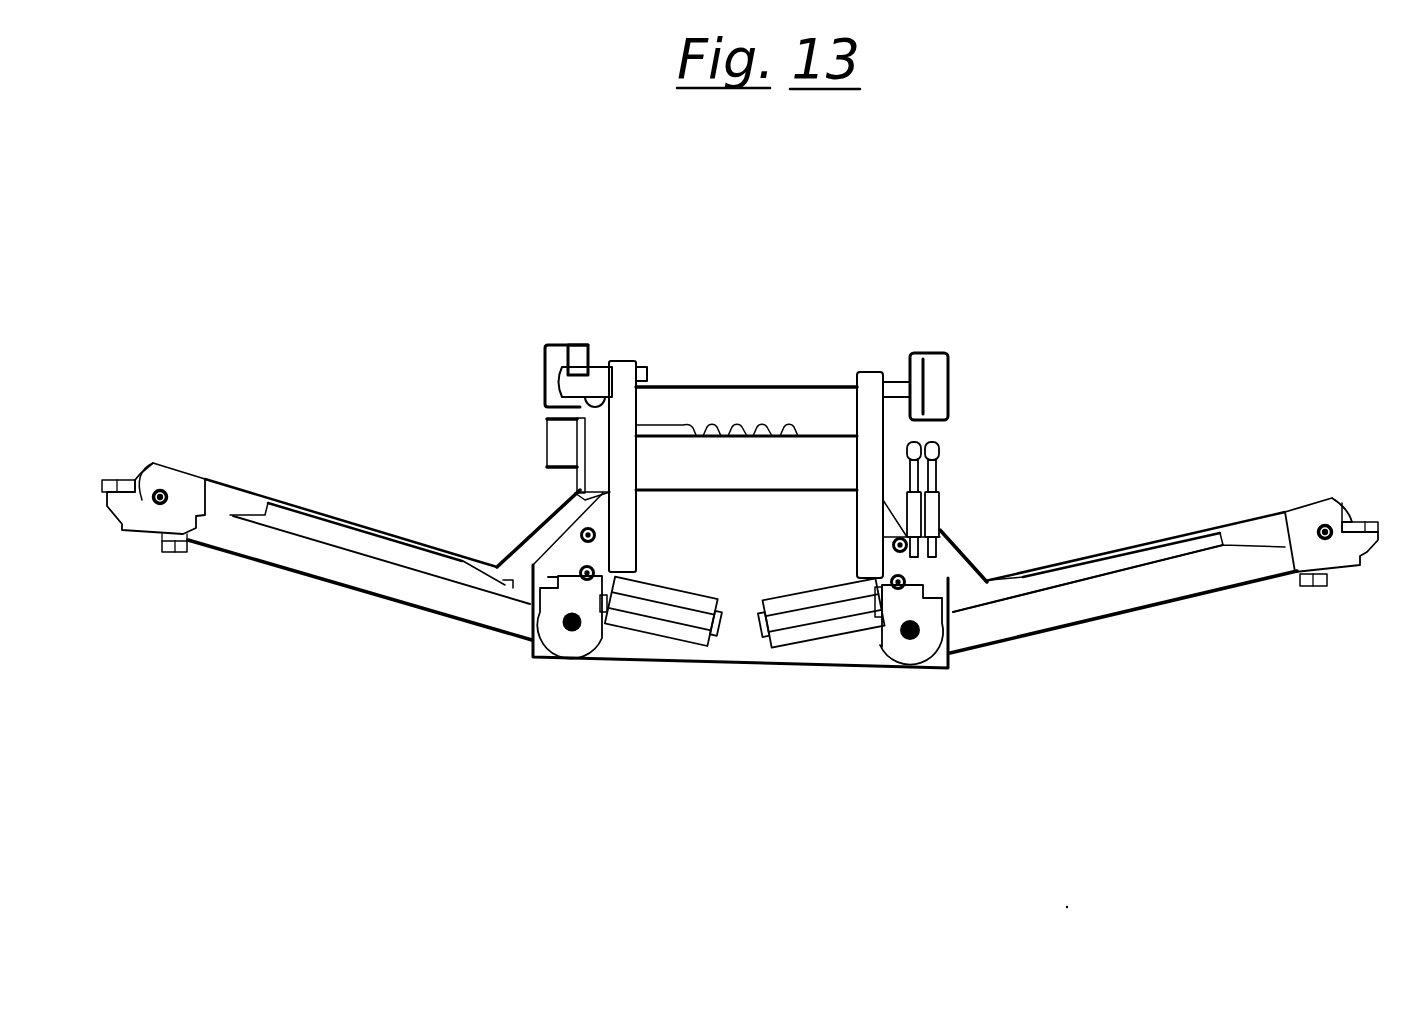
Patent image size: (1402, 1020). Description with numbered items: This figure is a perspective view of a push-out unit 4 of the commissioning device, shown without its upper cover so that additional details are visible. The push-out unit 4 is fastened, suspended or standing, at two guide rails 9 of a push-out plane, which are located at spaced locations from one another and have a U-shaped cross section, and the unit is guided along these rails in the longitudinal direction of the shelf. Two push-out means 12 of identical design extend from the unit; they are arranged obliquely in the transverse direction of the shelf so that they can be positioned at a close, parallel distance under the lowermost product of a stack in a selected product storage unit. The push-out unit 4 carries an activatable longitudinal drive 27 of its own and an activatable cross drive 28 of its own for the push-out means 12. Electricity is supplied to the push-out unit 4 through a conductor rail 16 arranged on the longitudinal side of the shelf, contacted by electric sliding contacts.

The push-out unit 4 is at (350, 282).
The guide rails 9 is at (590, 342).
The push-out means 12 is at (397, 583).
The conductor rail 16 is at (940, 445).
The longitudinal drive 27 is at (767, 472).
The cross drive 28 is at (642, 630).